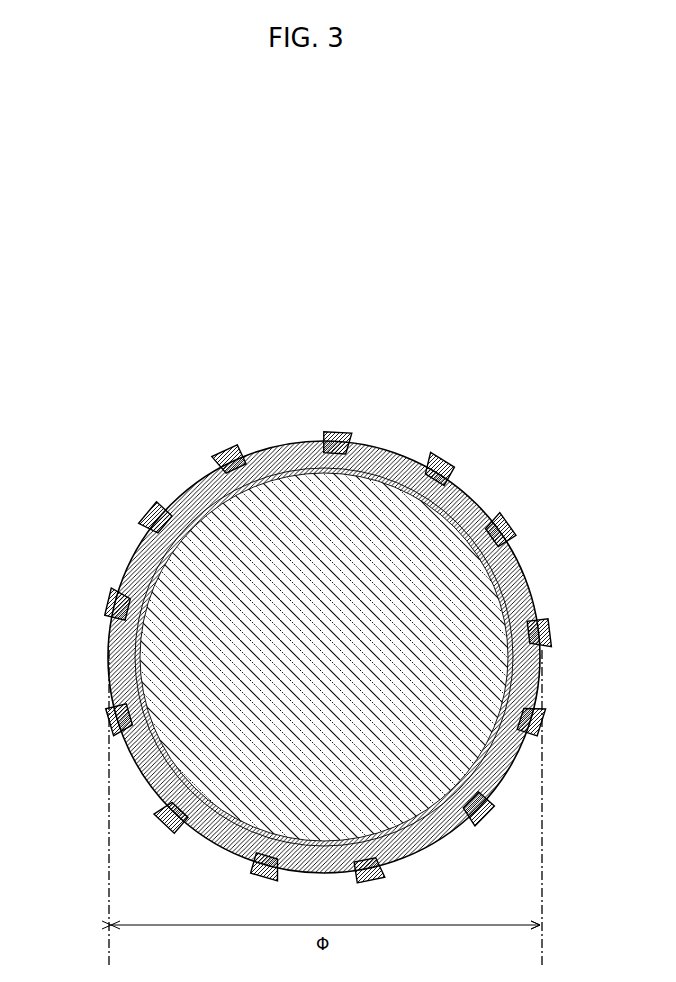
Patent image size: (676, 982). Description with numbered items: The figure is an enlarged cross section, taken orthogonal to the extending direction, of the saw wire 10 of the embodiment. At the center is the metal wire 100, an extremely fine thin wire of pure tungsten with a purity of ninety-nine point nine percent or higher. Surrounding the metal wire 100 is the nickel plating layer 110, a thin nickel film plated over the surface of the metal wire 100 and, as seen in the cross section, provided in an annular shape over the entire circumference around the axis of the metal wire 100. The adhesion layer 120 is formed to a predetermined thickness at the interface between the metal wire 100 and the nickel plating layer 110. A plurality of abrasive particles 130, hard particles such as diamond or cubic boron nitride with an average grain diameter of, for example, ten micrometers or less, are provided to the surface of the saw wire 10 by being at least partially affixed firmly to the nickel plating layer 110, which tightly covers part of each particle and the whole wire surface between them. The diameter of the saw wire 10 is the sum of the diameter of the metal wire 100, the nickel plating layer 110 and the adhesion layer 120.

The saw wire 10 is at (506, 421).
The metal wire 100 is at (453, 747).
The nickel plating layer 110 is at (120, 660).
The adhesion layer 120 is at (177, 772).
The abrasive particles 130 is at (216, 462).